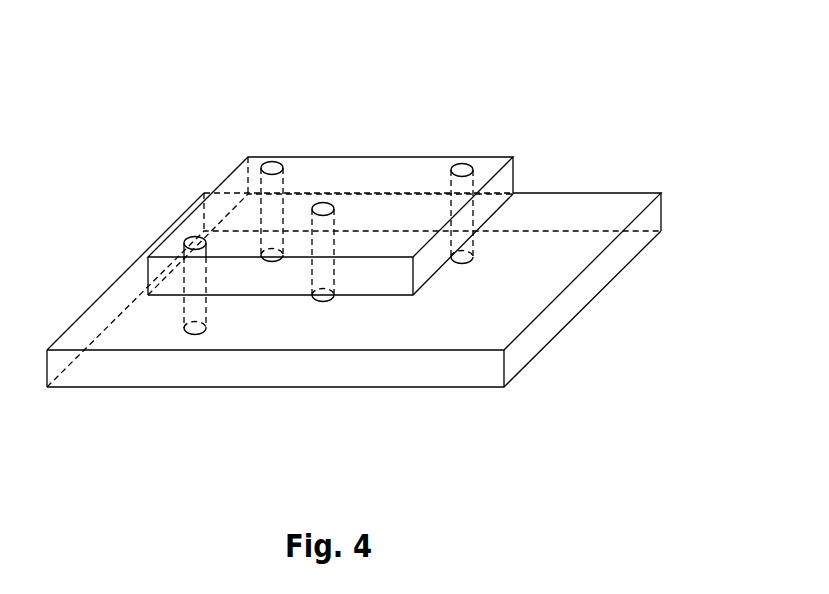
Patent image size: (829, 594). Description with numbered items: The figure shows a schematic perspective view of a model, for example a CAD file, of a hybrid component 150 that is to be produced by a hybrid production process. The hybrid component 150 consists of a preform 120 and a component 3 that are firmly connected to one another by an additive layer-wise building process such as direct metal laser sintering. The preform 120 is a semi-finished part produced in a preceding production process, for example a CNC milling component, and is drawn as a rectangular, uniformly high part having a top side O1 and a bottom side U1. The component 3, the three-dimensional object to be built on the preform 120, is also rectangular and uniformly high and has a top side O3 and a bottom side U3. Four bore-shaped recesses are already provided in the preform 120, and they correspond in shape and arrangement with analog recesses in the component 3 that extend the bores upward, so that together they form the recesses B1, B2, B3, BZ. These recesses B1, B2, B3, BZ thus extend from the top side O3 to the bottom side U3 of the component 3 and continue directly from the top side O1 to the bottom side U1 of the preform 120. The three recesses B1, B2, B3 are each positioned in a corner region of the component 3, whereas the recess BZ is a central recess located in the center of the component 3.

The hybrid component 150 is at (578, 105).
The preform 120 is at (595, 278).
The component 3 is at (502, 183).
The top side of the preform O1 is at (503, 308).
The bottom side of the preform U1 is at (302, 387).
The top side of the component O3 is at (377, 170).
The bottom side of the component U3 is at (367, 295).
The recess B1 is at (193, 237).
The recess B2 is at (272, 161).
The recess B3 is at (463, 163).
The central recess BZ is at (323, 202).